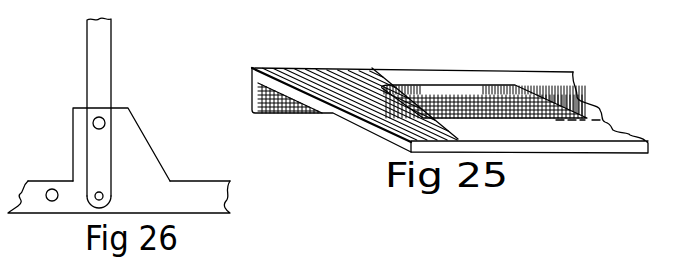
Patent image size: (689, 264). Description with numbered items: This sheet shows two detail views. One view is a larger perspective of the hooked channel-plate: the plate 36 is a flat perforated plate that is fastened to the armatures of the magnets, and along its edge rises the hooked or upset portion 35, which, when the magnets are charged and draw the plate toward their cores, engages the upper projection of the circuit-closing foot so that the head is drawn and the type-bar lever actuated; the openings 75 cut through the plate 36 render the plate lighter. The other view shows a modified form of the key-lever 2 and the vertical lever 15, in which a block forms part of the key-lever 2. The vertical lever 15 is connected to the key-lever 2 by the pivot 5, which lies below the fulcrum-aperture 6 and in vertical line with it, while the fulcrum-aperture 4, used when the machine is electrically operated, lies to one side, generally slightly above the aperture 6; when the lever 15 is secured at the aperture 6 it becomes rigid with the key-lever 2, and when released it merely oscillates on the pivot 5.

In FIG. 26, the key-lever 2 is at (119, 160).
In FIG. 26, the aperture for fulcrum-point 4 is at (53, 201).
In FIG. 26, the pivot 5 is at (103, 196).
In FIG. 26, the aperture for fulcrum-point 6 is at (104, 119).
In FIG. 26, the vertical lever 15 is at (99, 72).
In FIG. 25, the hooked portion 35 is at (258, 85).
In FIG. 25, the hooked plate 36 is at (450, 110).
In FIG. 25, the openings 75 is at (448, 90).